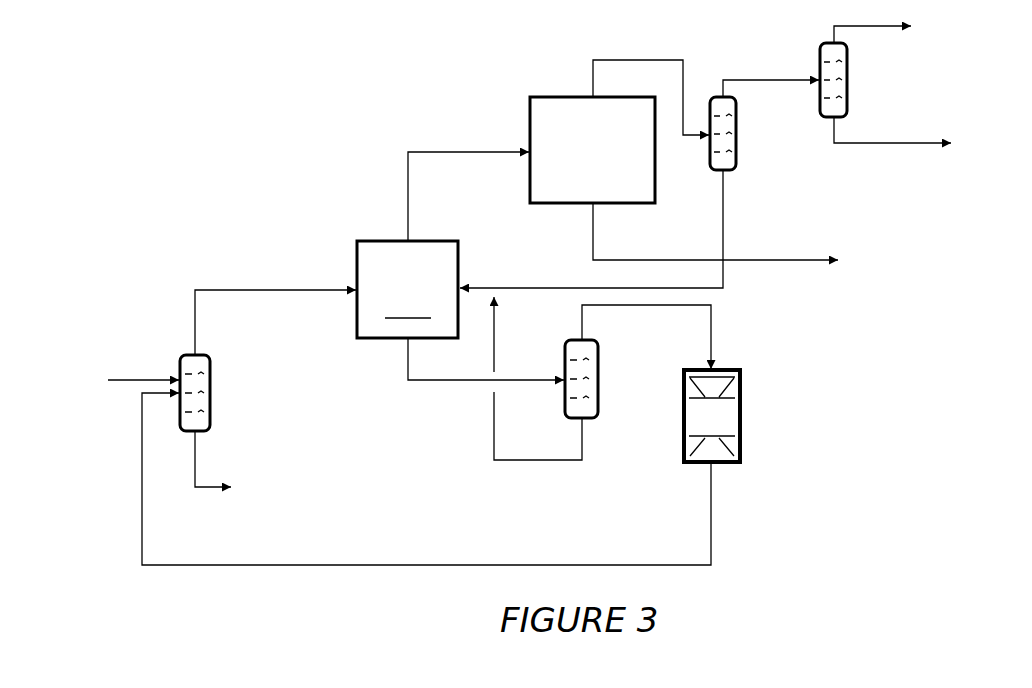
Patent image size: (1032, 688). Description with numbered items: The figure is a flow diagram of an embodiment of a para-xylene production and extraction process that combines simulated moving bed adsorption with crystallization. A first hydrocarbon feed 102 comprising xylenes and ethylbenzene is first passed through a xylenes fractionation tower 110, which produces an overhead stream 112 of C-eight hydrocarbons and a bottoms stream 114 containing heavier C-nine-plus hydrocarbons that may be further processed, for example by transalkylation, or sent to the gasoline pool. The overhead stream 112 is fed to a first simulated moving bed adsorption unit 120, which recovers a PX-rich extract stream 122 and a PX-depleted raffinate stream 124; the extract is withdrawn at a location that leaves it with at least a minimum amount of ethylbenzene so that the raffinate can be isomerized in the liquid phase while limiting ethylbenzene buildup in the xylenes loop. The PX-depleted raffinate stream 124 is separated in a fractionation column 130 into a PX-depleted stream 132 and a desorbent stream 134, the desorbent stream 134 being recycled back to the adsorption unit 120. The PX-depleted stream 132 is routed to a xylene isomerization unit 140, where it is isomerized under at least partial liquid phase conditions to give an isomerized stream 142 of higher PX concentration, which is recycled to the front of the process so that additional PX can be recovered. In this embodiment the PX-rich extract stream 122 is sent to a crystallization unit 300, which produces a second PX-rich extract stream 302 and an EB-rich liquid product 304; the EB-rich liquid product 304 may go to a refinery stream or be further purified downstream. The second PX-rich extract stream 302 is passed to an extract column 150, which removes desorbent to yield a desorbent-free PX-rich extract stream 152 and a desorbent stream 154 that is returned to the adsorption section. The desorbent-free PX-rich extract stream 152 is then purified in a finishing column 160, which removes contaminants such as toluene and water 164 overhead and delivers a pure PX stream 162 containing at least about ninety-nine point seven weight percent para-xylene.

The first hydrocarbon feed 102 is at (143, 367).
The xylenes fractionation tower 110 is at (255, 406).
The overhead stream 112 is at (272, 309).
The bottoms stream 114 is at (203, 471).
The first simulated moving bed adsorption unit 120 is at (390, 286).
The PX-rich extract stream 122 is at (447, 196).
The PX-depleted raffinate stream 124 is at (486, 376).
The fractionation column 130 is at (645, 396).
The PX-depleted stream 132 is at (646, 337).
The desorbent stream 134 is at (538, 378).
The xylene isomerization unit 140 is at (785, 434).
The isomerized stream 142 is at (426, 479).
The extract column 150 is at (781, 147).
The desorbent-free PX-rich extract stream 152 is at (771, 77).
The desorbent stream 154 is at (616, 229).
The finishing column 160 is at (895, 92).
The pure PX stream 162 is at (924, 137).
The toluene and water 164 is at (895, 29).
The crystallization unit 300 is at (575, 149).
The second PX-rich extract stream 302 is at (650, 82).
The EB-rich liquid product 304 is at (745, 239).